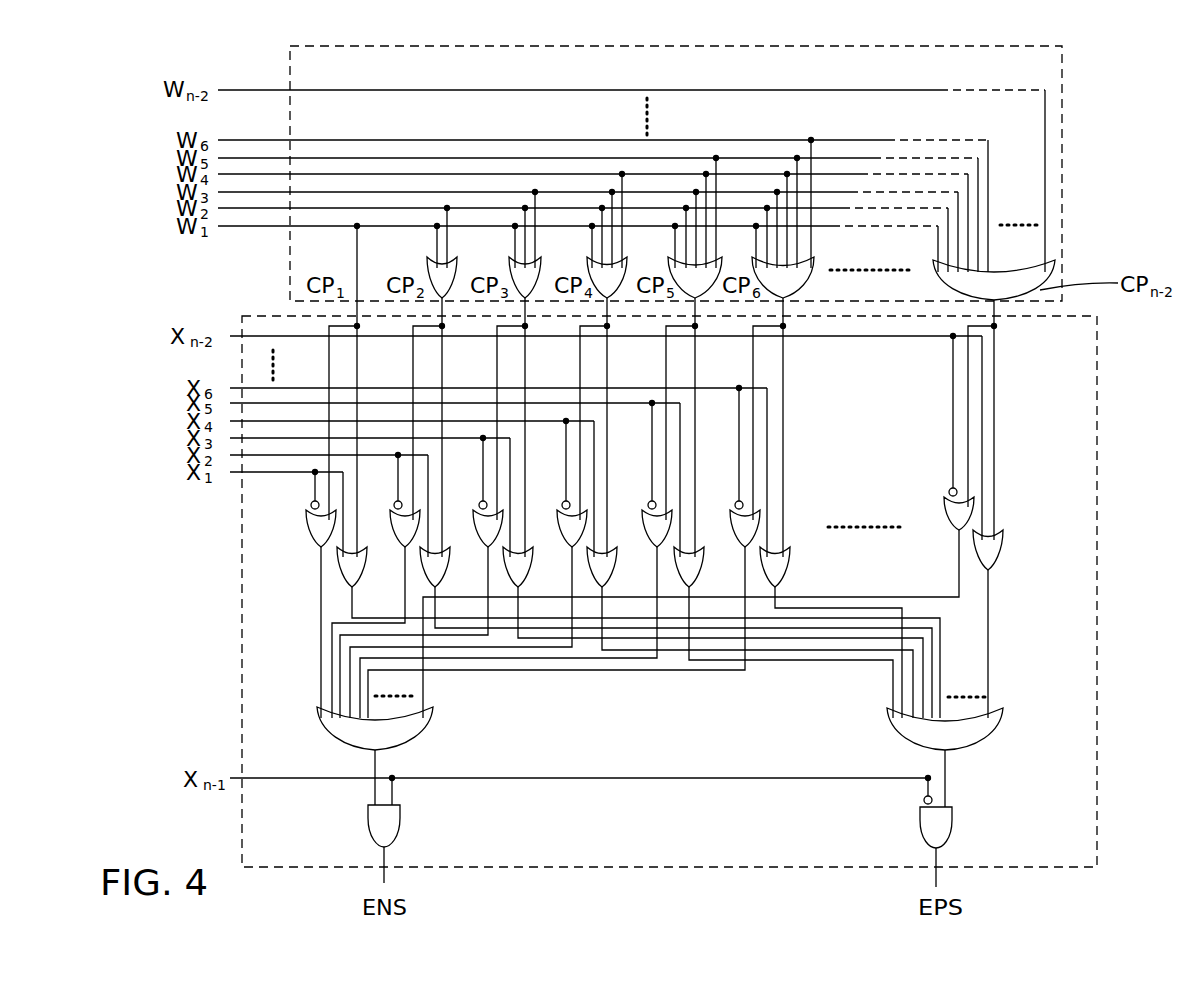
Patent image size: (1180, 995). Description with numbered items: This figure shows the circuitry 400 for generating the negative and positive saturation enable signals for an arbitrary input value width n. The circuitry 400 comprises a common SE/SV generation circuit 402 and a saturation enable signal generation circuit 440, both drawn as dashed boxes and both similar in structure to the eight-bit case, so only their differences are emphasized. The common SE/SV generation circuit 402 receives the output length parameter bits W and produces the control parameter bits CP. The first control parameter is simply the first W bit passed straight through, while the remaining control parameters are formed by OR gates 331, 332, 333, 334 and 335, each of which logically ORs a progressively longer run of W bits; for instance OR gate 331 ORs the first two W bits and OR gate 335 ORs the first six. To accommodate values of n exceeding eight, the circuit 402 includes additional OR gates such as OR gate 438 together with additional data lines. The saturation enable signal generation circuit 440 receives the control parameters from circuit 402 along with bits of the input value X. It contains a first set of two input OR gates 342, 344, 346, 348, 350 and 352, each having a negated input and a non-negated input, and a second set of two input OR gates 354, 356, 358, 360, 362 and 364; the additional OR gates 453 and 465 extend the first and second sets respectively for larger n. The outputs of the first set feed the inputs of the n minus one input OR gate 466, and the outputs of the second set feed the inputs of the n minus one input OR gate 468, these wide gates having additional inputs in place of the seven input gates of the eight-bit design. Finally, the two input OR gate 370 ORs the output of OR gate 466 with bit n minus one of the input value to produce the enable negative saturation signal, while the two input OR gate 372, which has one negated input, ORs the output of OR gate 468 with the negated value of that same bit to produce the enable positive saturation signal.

The circuitry 400 is at (1112, 216).
The common SE/SV generation circuit 402 is at (1063, 110).
The OR gate 331 is at (427, 262).
The OR gate 332 is at (509, 262).
The OR gate 333 is at (588, 262).
The OR gate 334 is at (669, 262).
The OR gate 335 is at (835, 254).
The OR gate 438 is at (957, 288).
The saturation enable signal generation circuit 440 is at (1098, 487).
The OR gate 342 is at (306, 530).
The OR gate 344 is at (391, 520).
The OR gate 346 is at (474, 520).
The OR gate 348 is at (558, 520).
The OR gate 350 is at (643, 520).
The OR gate 352 is at (731, 520).
The OR gate 453 is at (945, 497).
The OR gate 354 is at (366, 560).
The OR gate 356 is at (450, 560).
The OR gate 358 is at (533, 560).
The OR gate 360 is at (617, 560).
The OR gate 362 is at (704, 560).
The OR gate 364 is at (788, 575).
The OR gate 465 is at (1004, 548).
The n-1 input OR gate 466 is at (432, 738).
The n-1 input OR gate 468 is at (1002, 730).
The two input OR gate 370 is at (368, 825).
The two input OR gate 372 is at (952, 835).